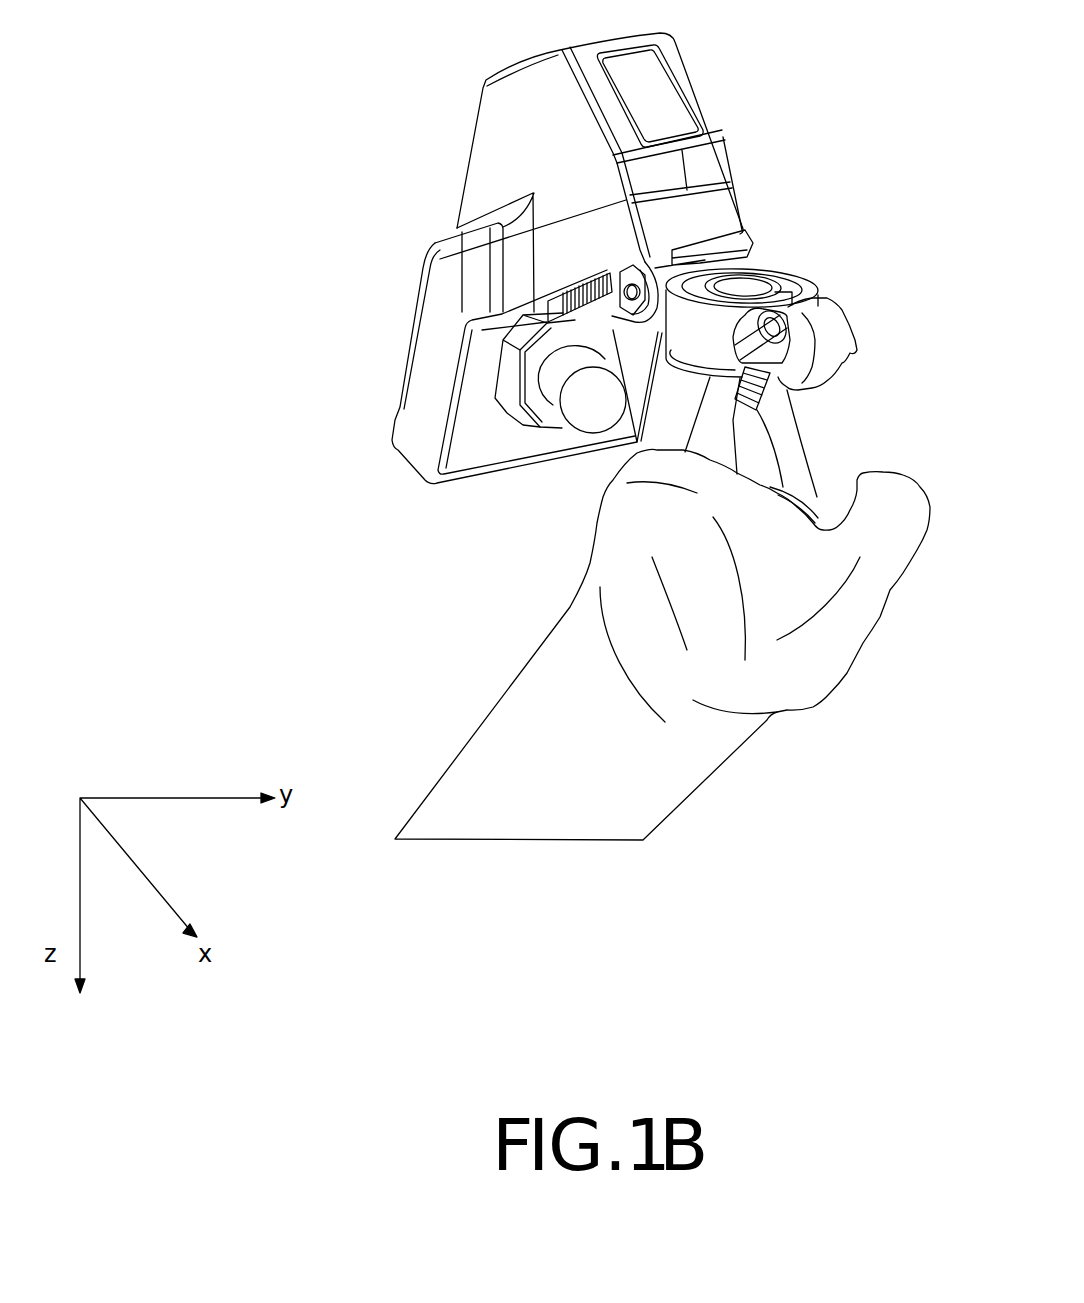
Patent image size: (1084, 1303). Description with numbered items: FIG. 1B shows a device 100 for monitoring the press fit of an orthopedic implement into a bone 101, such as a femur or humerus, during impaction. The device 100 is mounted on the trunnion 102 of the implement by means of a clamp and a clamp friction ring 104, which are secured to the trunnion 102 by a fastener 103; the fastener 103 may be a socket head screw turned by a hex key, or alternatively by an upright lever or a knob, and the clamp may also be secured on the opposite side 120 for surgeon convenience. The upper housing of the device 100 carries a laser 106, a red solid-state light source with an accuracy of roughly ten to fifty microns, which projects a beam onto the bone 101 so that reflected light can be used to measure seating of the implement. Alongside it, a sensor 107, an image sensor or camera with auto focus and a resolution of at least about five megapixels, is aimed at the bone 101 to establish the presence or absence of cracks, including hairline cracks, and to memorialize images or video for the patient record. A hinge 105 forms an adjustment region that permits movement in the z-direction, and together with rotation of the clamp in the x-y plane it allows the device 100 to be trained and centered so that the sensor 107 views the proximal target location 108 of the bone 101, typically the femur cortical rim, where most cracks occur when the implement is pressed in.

The device 100 is at (459, 640).
The bone 101 is at (860, 651).
The trunnion 102 is at (777, 453).
The fastener 103 is at (843, 310).
The clamp friction ring 104 is at (788, 283).
The hinge 105 is at (760, 250).
The laser 106 is at (580, 328).
The sensor 107 is at (526, 420).
The target location 108 is at (570, 510).
The opposite side 120 is at (673, 113).